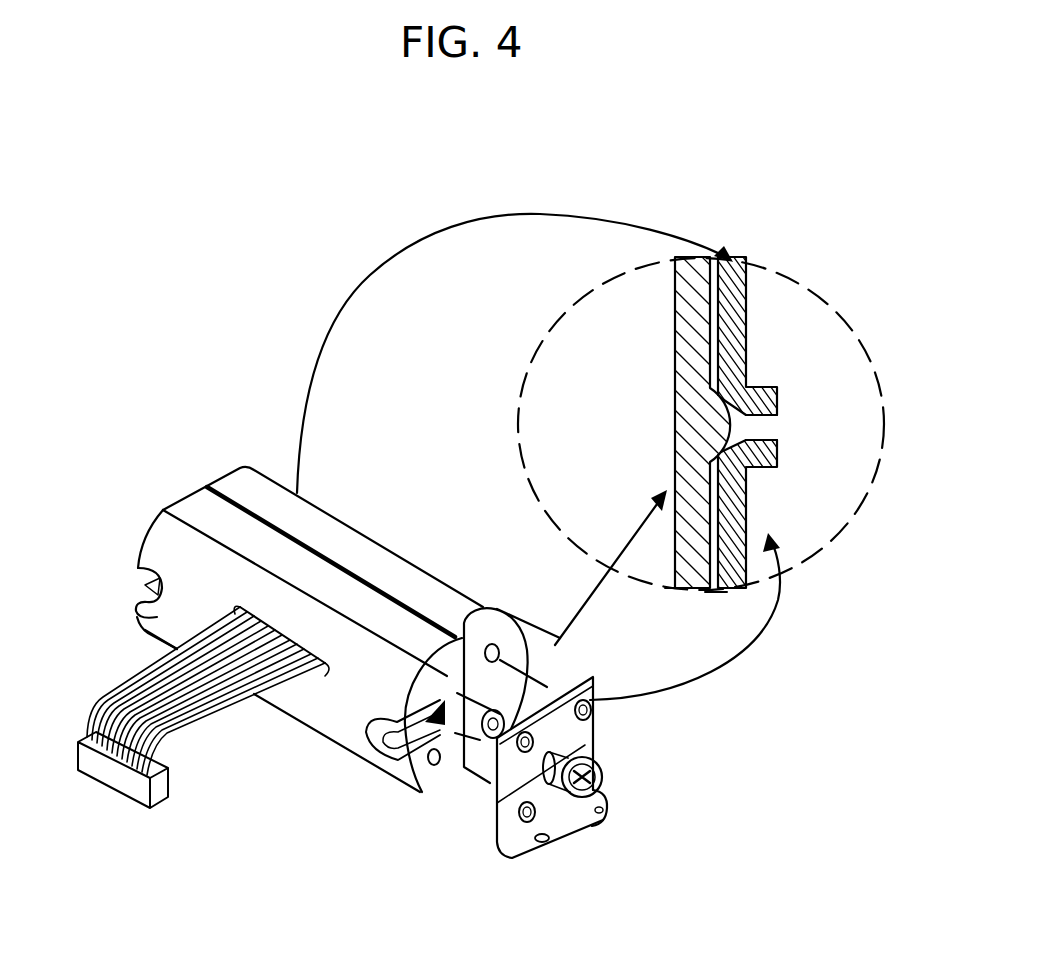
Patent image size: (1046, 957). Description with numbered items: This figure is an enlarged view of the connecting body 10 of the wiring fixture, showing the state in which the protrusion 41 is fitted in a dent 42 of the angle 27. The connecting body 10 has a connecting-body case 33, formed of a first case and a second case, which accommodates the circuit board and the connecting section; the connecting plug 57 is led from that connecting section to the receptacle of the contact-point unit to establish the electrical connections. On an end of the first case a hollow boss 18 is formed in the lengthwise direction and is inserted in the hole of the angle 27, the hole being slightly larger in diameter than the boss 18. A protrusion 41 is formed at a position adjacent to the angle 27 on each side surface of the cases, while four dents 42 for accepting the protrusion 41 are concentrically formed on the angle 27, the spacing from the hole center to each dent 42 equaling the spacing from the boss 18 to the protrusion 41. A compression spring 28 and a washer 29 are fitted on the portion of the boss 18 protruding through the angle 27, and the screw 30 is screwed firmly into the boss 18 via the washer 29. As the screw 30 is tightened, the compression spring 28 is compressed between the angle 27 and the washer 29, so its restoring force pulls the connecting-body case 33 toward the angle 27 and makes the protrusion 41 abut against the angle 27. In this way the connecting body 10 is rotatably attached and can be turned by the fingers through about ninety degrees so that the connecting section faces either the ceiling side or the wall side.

The connecting body 10 is at (675, 298).
The angle 27 is at (737, 297).
The dent 42 is at (773, 387).
The protrusion 41 is at (780, 417).
The connecting-body case 33 is at (335, 720).
The connecting plug 57 is at (117, 777).
The hollow boss 18 is at (447, 762).
The compression spring 28 is at (500, 808).
The screw 30 is at (602, 776).
The washer 29 is at (603, 818).